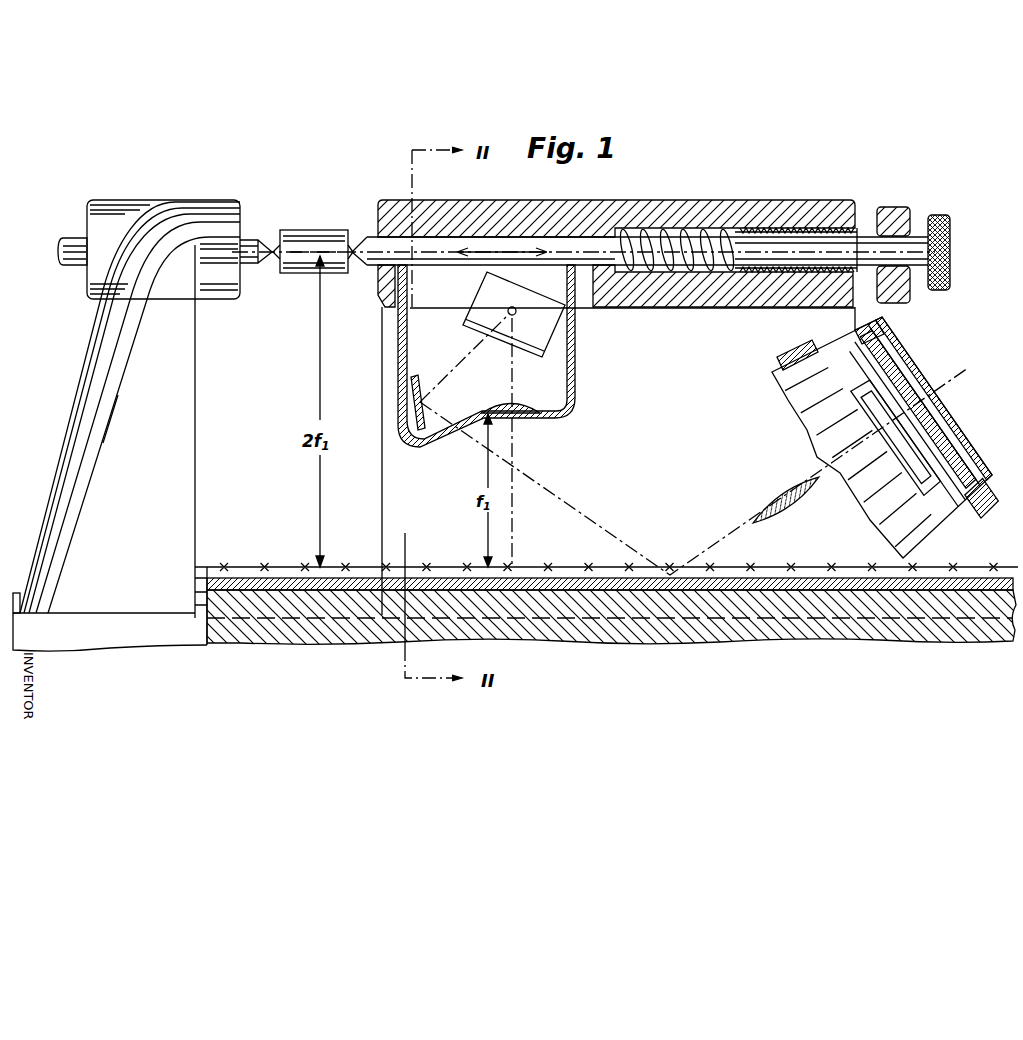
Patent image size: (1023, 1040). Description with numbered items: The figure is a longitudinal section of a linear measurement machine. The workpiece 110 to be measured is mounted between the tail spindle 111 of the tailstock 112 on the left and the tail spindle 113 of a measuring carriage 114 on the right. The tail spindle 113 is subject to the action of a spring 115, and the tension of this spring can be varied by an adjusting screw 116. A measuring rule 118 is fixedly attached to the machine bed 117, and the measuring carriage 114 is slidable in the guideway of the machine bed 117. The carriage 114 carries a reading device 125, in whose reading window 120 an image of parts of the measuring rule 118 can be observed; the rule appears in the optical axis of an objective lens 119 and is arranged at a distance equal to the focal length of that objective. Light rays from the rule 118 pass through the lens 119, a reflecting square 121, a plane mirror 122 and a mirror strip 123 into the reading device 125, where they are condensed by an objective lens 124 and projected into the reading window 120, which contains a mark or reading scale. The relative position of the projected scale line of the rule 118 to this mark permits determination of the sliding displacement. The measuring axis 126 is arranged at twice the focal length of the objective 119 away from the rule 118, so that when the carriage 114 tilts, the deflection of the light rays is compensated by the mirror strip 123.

The workpiece 110 is at (308, 243).
The tail spindle 111 is at (254, 240).
The tailstock 112 is at (122, 346).
The tail spindle 113 is at (442, 253).
The measuring carriage 114 is at (585, 203).
The spring 115 is at (672, 262).
The adjusting screw 116 is at (891, 218).
The machine bed 117 is at (203, 608).
The measuring rule 118 is at (562, 567).
The objective lens 119 is at (533, 416).
The reading window 120 is at (857, 493).
The reflecting square 121 is at (533, 340).
The plane mirror 122 is at (421, 380).
The mirror strip 123 is at (767, 578).
The objective lens 124 is at (762, 483).
The reading device 125 is at (953, 510).
The measuring axis 126 is at (312, 258).